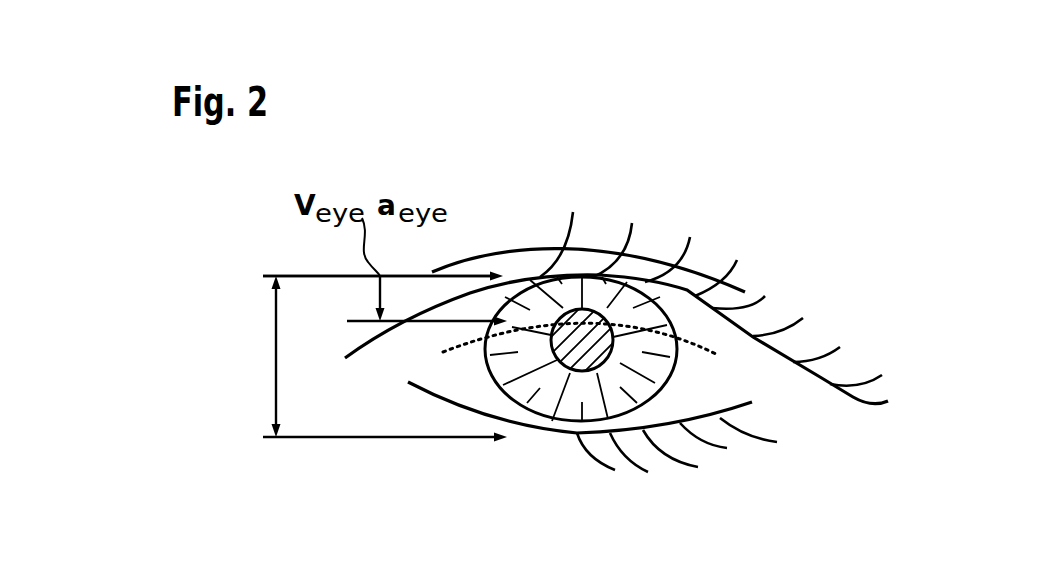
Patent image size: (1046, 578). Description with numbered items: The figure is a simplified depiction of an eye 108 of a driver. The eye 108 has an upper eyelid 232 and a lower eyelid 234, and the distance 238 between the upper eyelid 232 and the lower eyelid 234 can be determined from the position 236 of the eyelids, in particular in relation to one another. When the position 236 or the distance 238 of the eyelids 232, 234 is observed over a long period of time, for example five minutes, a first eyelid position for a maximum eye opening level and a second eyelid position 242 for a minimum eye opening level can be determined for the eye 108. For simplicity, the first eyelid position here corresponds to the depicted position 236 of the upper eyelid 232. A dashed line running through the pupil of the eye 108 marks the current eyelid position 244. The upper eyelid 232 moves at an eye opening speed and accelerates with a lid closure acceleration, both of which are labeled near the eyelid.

The eye 108 is at (815, 214).
The upper eyelid 232 is at (537, 249).
The lower eyelid 234 is at (550, 434).
The position 236 is at (332, 276).
The distance 238 is at (276, 365).
The second eyelid position 242 is at (358, 436).
The current eyelid position 244 is at (400, 322).